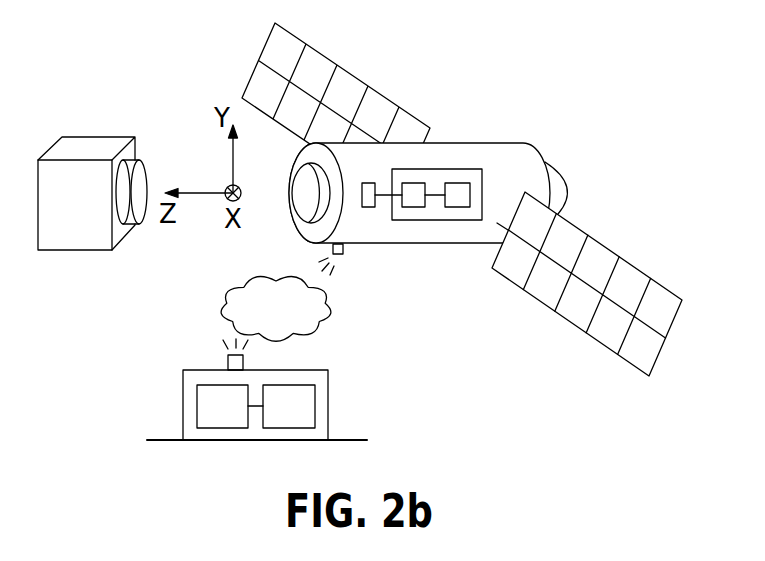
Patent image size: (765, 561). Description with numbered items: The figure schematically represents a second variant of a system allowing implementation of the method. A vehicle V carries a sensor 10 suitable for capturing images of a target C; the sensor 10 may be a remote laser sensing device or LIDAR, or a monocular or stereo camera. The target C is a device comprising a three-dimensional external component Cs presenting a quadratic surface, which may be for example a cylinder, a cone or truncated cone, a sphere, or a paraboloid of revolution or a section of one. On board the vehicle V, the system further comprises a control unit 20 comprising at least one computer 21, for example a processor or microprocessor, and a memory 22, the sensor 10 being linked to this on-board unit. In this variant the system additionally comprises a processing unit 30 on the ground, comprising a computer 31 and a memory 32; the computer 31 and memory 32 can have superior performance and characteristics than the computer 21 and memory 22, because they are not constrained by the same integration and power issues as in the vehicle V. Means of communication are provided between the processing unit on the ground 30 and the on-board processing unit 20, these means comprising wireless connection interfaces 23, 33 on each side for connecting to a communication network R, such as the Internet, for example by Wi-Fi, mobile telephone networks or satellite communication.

The sensor 10 is at (368, 207).
The control unit 20 is at (457, 186).
The computer 21 is at (420, 207).
The memory 22 is at (460, 183).
The wireless connection interface 23 is at (340, 255).
The processing unit on the ground 30 is at (294, 382).
The computer 31 is at (238, 420).
The memory 32 is at (306, 420).
The wireless connection interface 33 is at (228, 363).
The target C is at (92, 149).
The three-dimensional external component Cs is at (124, 142).
The vehicle V is at (525, 180).
The radio link R is at (276, 308).